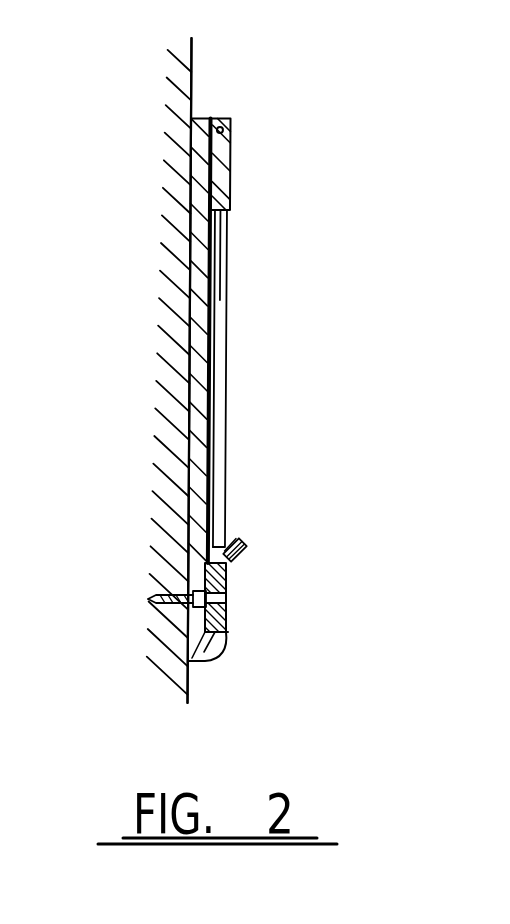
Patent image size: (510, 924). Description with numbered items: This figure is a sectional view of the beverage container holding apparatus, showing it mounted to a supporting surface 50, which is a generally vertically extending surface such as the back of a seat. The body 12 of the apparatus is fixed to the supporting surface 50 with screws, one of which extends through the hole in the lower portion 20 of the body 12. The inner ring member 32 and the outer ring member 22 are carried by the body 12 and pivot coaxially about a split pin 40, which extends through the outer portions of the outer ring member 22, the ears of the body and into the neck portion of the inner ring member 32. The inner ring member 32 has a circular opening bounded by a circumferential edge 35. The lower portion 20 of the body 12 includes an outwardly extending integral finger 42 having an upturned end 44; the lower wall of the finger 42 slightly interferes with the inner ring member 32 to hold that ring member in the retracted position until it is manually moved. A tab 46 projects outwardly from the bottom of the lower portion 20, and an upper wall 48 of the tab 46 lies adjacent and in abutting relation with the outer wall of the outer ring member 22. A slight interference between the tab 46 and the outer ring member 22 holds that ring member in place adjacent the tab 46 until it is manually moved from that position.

The body 12 is at (121, 370).
The lower portion 20 is at (193, 593).
The outer ring member 22 is at (227, 615).
The inner ring member 32 is at (222, 265).
The circumferential edge 35 is at (228, 323).
The split pin 40 is at (223, 129).
The finger 42 is at (238, 560).
The upturned end 44 is at (237, 547).
The tab 46 is at (220, 657).
The upper wall 48 is at (228, 631).
The supporting surface 50 is at (192, 90).